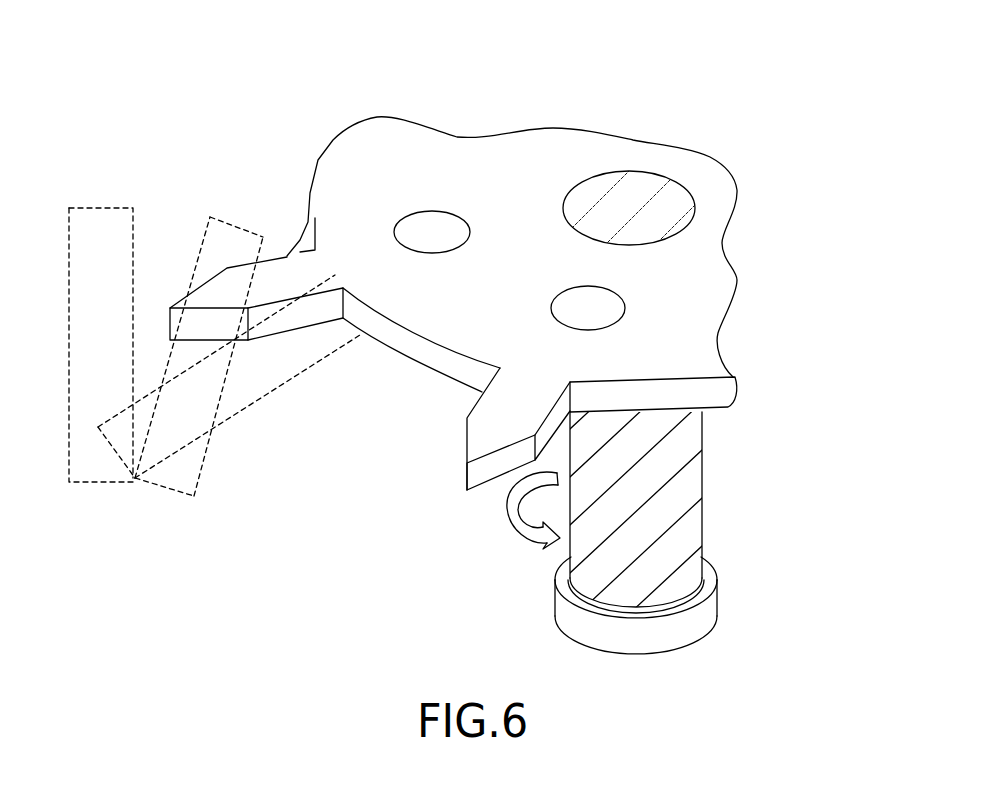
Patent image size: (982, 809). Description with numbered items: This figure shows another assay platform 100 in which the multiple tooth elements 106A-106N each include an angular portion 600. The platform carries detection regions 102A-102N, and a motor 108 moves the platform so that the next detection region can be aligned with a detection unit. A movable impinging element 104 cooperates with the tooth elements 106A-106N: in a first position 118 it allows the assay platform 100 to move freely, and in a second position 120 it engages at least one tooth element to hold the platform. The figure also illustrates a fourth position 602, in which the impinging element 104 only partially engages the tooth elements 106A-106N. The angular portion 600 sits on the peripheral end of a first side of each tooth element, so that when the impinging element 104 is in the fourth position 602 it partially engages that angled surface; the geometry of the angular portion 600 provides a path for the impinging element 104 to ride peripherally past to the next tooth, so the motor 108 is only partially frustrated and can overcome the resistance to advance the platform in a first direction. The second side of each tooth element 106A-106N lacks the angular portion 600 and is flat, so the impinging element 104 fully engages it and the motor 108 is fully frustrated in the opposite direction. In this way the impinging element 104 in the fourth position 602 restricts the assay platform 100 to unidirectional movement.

The assay platform 100 is at (327, 117).
The detection regions 102A-102N is at (452, 213).
The impinging element 104 is at (69, 208).
The tooth elements 106A-106N is at (300, 238).
The motor 108 is at (710, 607).
The first position 118 is at (110, 205).
The second position 120 is at (263, 386).
The angular portion 600 is at (257, 332).
The fourth position 602 is at (226, 222).